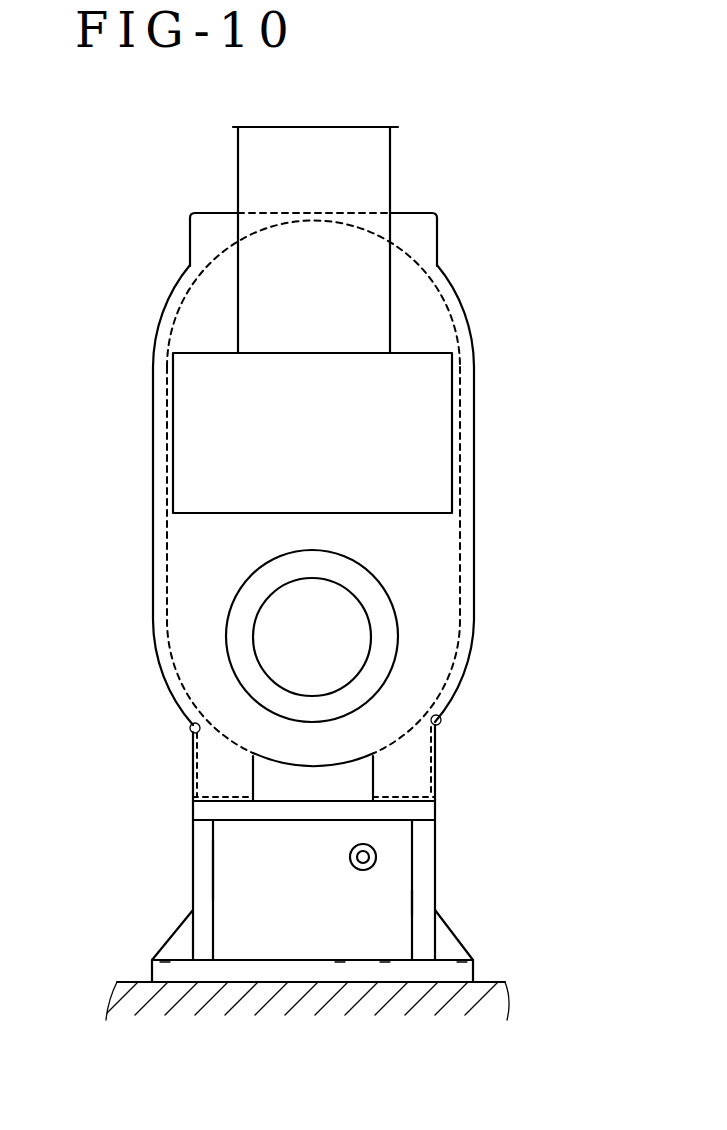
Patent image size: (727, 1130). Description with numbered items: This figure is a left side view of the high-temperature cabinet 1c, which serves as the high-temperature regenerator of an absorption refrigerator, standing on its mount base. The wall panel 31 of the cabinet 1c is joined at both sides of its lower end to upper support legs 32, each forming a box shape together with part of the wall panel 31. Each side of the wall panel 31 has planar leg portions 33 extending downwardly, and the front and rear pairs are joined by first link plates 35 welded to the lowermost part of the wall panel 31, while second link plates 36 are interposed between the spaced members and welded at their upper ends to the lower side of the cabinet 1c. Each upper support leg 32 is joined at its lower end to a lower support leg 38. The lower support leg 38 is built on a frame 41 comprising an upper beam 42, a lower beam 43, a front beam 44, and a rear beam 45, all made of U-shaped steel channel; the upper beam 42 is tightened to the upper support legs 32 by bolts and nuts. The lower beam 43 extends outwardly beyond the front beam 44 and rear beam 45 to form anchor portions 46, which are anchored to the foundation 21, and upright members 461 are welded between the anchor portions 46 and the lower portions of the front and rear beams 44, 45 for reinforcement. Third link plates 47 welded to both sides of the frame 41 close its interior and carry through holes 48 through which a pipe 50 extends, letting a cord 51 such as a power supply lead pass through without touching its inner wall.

The high-temperature cabinet 1c is at (178, 281).
The wall panel 31 is at (190, 559).
The second link plate 36 is at (190, 726).
The upper support leg 32 is at (192, 757).
The planar leg portion 33 is at (192, 777).
The first link plate 35 is at (358, 780).
The frame 41 is at (190, 833).
The lower support leg 38 is at (188, 878).
The front beam 44 is at (206, 869).
The cord 51 is at (351, 859).
The through hole 48 is at (360, 870).
The upper beam 42 is at (382, 817).
The rear beam 45 is at (433, 902).
The upright member 461 is at (177, 927).
The lower beam 43 is at (437, 970).
The anchor portion 46 is at (165, 970).
The foundation 21 is at (257, 998).
The third link plate 47 is at (340, 947).
The pipe 50 is at (377, 868).